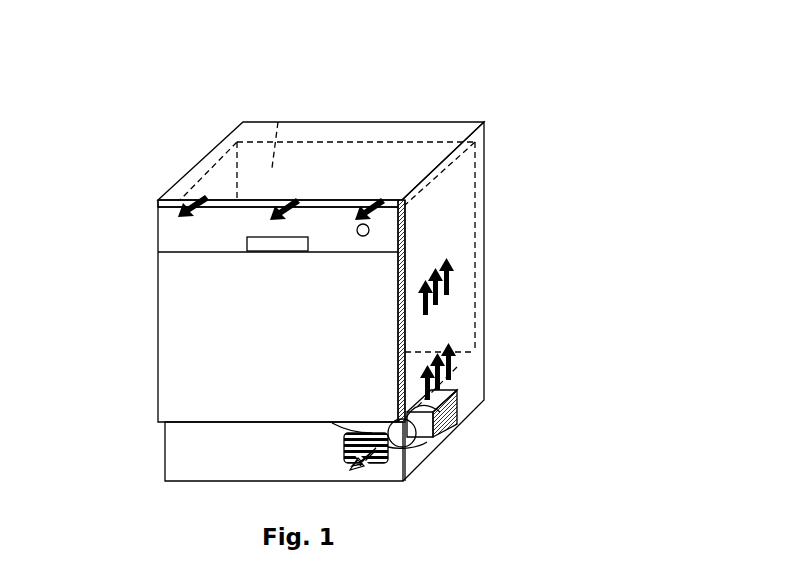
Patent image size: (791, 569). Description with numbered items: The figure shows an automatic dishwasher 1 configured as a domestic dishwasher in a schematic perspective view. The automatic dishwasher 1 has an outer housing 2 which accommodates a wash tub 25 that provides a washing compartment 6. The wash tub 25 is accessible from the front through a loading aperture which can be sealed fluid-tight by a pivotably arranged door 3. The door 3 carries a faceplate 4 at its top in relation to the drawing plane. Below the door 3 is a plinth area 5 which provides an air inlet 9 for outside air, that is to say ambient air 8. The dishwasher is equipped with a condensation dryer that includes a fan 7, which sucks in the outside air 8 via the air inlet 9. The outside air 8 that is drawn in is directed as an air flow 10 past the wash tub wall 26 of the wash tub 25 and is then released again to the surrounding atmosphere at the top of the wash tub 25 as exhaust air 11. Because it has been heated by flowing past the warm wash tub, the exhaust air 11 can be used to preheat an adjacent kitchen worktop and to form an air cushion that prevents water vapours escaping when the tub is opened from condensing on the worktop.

The automatic dishwasher 1 is at (512, 180).
The outer housing 2 is at (222, 133).
The door 3 is at (190, 330).
The faceplate 4 is at (158, 243).
The plinth area 5 is at (190, 447).
The washing compartment 6 is at (390, 142).
The fan 7 is at (427, 440).
The outside air 8 is at (350, 465).
The air inlet 9 is at (370, 433).
The air flow 10 is at (450, 360).
The exhaust air 11 is at (210, 195).
The wash tub 25 is at (278, 122).
The wash tub wall 26 is at (450, 232).